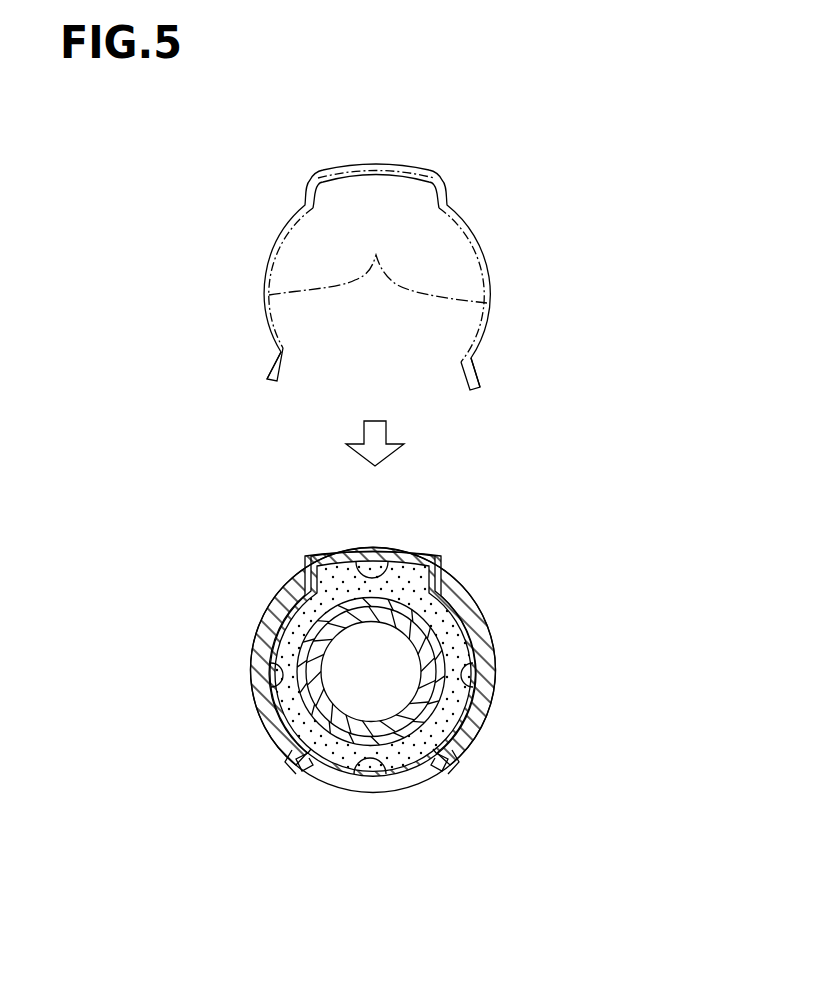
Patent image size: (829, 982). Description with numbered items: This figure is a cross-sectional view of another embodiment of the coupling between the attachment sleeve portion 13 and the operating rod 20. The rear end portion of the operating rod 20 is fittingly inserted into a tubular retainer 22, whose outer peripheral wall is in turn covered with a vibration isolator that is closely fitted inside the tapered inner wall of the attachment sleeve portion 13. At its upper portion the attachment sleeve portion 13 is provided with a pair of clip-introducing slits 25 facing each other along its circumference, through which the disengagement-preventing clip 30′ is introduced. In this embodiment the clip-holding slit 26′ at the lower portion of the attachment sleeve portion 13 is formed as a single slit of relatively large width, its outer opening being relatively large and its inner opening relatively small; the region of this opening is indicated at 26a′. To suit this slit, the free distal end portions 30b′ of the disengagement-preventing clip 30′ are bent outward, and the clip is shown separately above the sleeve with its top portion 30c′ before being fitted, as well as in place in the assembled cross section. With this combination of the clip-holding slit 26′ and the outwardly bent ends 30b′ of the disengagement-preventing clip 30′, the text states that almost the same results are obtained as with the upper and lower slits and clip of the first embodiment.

The attachment sleeve portion 13 is at (509, 650).
The operating rod 20 is at (317, 693).
The tubular retainer 22 is at (407, 742).
The clip-introducing slits 25 is at (311, 560).
The clip-holding slit 26′ is at (370, 790).
The engagement notch of elastic member 26a′ is at (292, 750).
The disengagement-preventing clip 30′ is at (418, 355).
The free distal end portions 30b′ is at (268, 374).
The clip top projection 30c′ is at (427, 222).